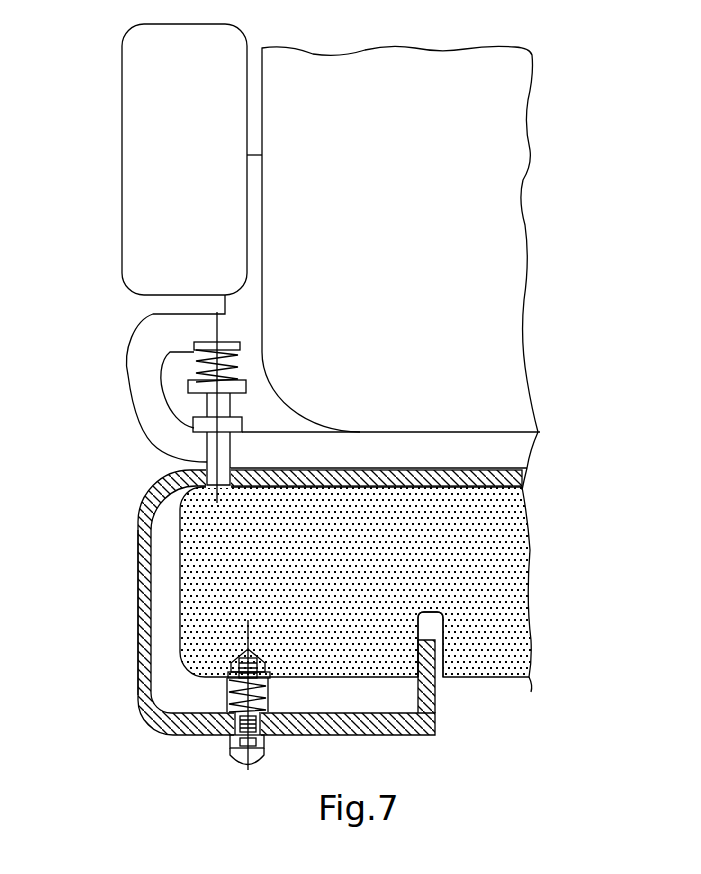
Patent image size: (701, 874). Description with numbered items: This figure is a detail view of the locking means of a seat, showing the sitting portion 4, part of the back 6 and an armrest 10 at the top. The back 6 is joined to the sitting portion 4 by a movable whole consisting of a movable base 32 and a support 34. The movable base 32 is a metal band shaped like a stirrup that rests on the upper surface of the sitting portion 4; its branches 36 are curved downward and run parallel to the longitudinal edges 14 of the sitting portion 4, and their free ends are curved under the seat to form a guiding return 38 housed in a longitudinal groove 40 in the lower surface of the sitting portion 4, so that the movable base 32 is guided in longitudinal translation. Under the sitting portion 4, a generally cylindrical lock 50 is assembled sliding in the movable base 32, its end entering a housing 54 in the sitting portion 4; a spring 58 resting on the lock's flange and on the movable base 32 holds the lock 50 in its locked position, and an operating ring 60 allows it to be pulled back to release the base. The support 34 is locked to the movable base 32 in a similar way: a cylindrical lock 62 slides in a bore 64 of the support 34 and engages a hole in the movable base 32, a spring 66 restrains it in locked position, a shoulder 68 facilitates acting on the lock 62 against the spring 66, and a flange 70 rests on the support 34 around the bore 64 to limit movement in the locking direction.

The sitting portion 4 is at (517, 545).
The back 6 is at (505, 170).
The armrest 10 is at (150, 168).
The longitudinal edge 14 is at (178, 565).
The movable base 32 is at (523, 477).
The support 34 is at (517, 443).
The branch 36 is at (137, 627).
The guiding return 38 is at (433, 652).
The longitudinal groove 40 is at (440, 616).
The lock 50 is at (235, 686).
The housing 54 is at (240, 651).
The spring 58 is at (270, 698).
The operating ring 60 is at (233, 758).
The cylindrical lock 62 is at (160, 448).
The bore 64 is at (232, 445).
The spring 66 is at (241, 356).
The shoulder 68 is at (192, 397).
The flange 70 is at (242, 418).